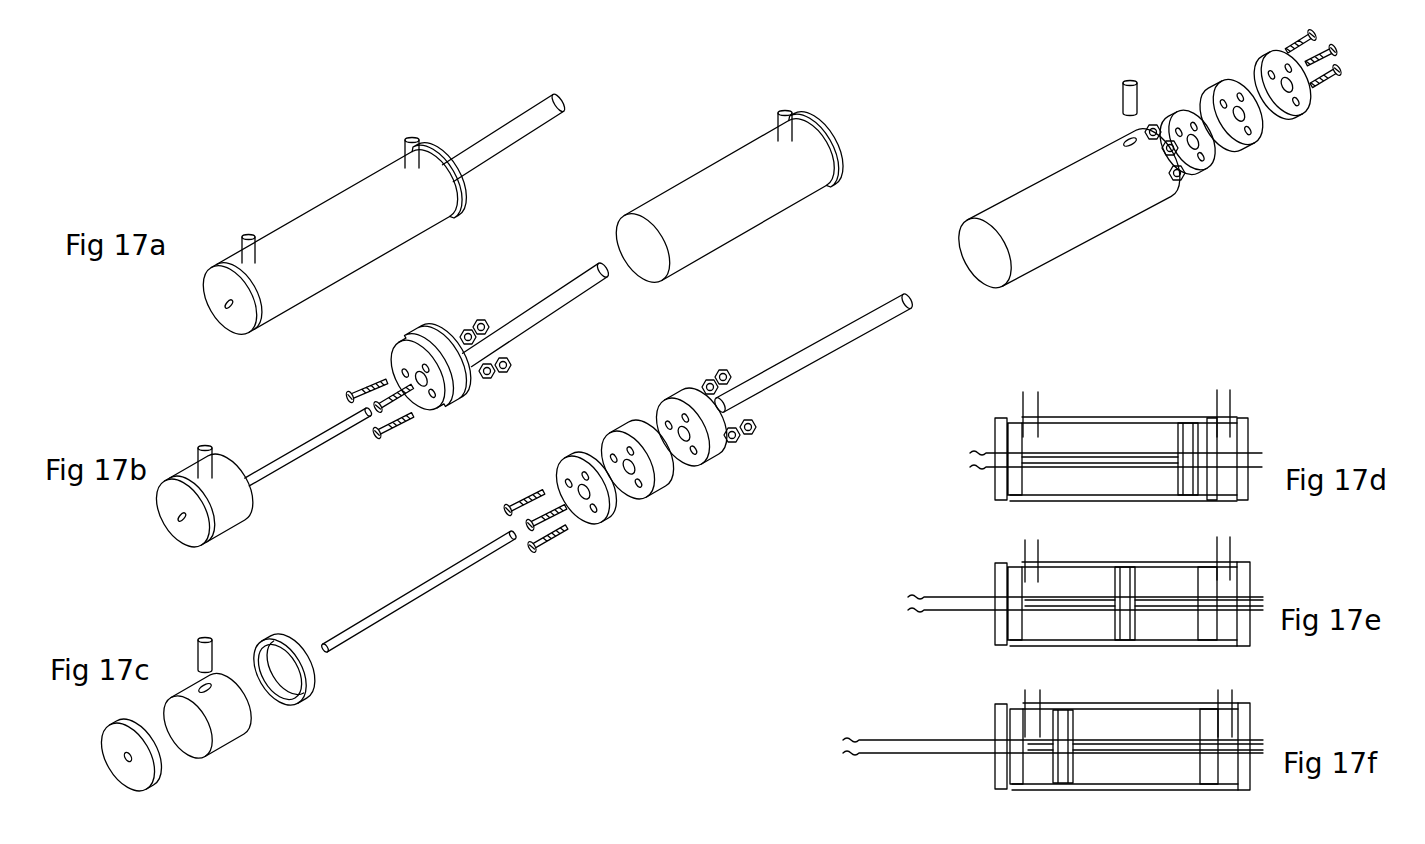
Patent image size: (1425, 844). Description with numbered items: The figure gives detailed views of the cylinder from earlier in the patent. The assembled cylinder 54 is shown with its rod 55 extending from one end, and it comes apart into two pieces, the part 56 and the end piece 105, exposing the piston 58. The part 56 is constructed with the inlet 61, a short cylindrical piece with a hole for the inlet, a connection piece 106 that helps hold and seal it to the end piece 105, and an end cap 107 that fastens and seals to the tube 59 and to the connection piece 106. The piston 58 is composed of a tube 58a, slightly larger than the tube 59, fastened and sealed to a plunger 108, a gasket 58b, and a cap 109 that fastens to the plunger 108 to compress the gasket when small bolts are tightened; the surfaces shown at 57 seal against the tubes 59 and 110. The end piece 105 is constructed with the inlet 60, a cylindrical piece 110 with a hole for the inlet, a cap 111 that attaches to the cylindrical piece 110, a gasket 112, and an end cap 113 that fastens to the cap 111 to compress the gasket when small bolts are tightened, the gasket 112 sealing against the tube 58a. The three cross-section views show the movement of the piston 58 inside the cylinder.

In FIG. 17A, the cylinder body 54 is at (313, 203).
In FIG. 17A, the piston rod 55 is at (537, 127).
In FIG. 17B, the part 56 is at (240, 538).
In FIG. 17C, the part 56 is at (300, 690).
In FIG. 17B, the sealing surfaces 57 is at (648, 497).
In FIG. 17B, the piston 58 is at (413, 340).
In FIG. 17D, the piston 58 is at (1190, 430).
In FIG. 17E, the piston 58 is at (1127, 577).
In FIG. 17F, the piston 58 is at (1060, 720).
In FIG. 17B, the tube 58a is at (552, 300).
In FIG. 17B, the gasket 58b is at (463, 385).
In FIG. 17B, the tube 59 is at (300, 445).
In FIG. 17C, the tube 59 is at (385, 615).
In FIG. 17A, the inlet 60 is at (785, 110).
In FIG. 17B, the inlet 61 is at (213, 425).
In FIG. 17C, the inlet 61 is at (197, 640).
In FIG. 17A, the end piece 105 is at (747, 222).
In FIG. 17C, the connection piece 106 is at (227, 738).
In FIG. 17C, the end cap 107 is at (138, 780).
In FIG. 17B, the plunger 108 is at (598, 513).
In FIG. 17B, the cap 109 is at (707, 460).
In FIG. 17A, the cylindrical piece 110 is at (1093, 210).
In FIG. 17A, the cap 111 is at (1200, 152).
In FIG. 17A, the gasket 112 is at (1243, 132).
In FIG. 17A, the end cap 113 is at (1330, 112).